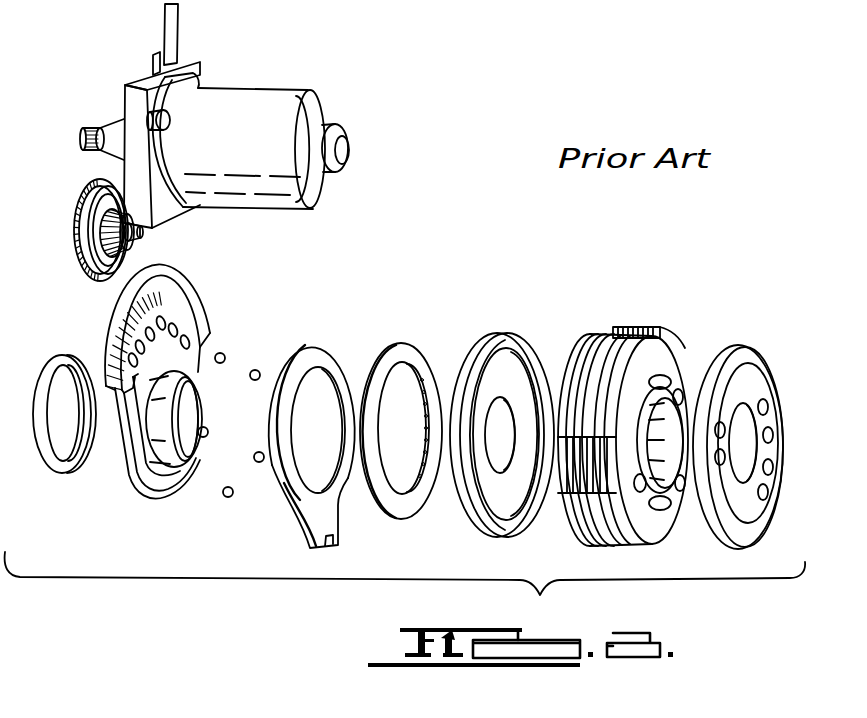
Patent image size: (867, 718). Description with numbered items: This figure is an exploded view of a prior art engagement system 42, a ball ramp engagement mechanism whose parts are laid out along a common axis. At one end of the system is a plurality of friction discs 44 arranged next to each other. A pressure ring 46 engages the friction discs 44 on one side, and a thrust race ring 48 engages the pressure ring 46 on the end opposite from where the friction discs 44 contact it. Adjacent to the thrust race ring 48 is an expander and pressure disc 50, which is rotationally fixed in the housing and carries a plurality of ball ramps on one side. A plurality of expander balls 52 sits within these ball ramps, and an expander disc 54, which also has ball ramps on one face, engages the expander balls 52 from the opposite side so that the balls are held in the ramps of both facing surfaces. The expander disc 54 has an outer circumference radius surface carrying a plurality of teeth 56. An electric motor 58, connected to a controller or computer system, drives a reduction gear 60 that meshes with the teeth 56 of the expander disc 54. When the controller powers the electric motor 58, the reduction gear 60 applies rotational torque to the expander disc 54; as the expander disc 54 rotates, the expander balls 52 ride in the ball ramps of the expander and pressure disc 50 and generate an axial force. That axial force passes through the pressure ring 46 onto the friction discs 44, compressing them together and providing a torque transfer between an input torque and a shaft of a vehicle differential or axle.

The prior art engagement system 42 is at (405, 586).
The friction discs 44 is at (627, 326).
The pressure ring 46 is at (504, 332).
The thrust race ring 48 is at (407, 345).
The expander and pressure disc 50 is at (307, 338).
The expander balls 52 is at (255, 368).
The expander disc 54 is at (189, 297).
The teeth 56 is at (127, 313).
The electric motor 58 is at (262, 104).
The reduction gear 60 is at (143, 233).